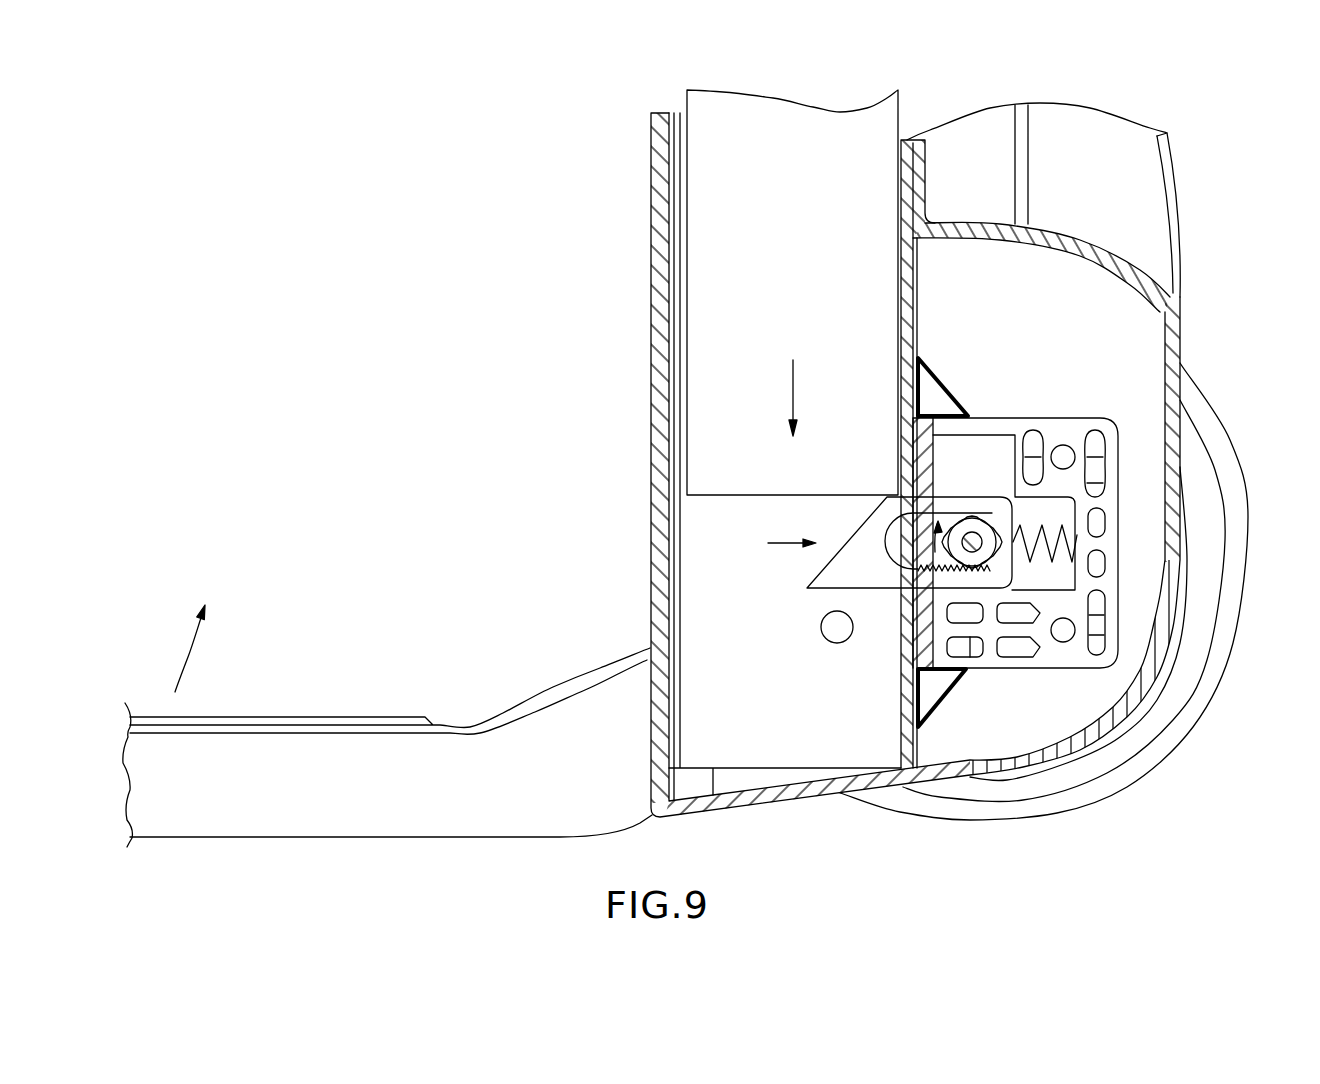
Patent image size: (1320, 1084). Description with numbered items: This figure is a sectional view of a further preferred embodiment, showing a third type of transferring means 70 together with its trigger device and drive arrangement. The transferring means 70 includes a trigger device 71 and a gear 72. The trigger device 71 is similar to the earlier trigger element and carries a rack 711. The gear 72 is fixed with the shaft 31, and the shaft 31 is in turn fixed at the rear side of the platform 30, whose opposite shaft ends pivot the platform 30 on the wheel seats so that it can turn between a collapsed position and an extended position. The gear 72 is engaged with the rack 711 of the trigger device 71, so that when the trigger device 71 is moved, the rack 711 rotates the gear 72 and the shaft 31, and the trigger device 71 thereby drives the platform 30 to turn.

The platform 30 is at (283, 713).
The shaft 31 is at (977, 552).
The transferring means 70 is at (1058, 410).
The trigger device 71 is at (873, 577).
The rack 711 is at (933, 572).
The gear 72 is at (1005, 552).